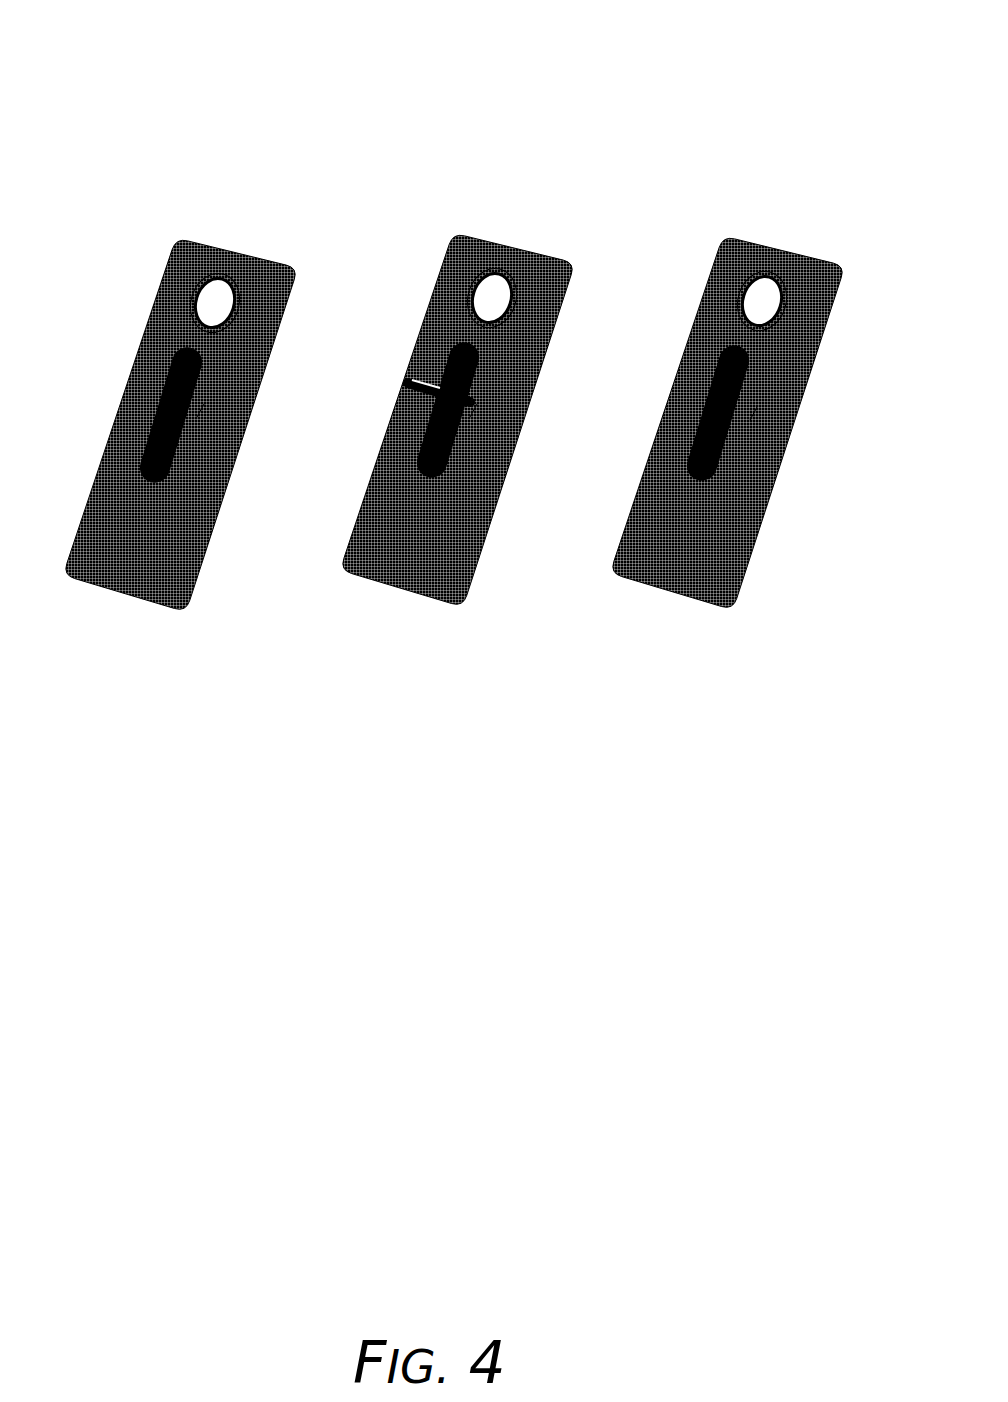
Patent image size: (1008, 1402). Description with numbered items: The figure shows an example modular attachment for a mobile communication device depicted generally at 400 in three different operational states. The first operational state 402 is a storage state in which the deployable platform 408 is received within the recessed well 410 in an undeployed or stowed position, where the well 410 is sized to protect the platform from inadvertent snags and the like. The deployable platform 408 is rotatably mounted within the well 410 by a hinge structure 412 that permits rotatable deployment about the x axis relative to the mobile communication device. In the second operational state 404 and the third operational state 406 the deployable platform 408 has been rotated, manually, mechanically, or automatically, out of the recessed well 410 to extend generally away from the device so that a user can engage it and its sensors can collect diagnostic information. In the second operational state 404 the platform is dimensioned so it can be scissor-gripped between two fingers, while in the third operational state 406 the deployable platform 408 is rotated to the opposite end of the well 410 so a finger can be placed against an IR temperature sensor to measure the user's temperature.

The modular attachment in three operational states 400 is at (548, 70).
The first operational state 402 is at (226, 238).
The second operational state 404 is at (504, 231).
The third operational state 406 is at (770, 231).
The deployable platform 408 is at (184, 350).
The recessed well 410 is at (157, 433).
The hinge structure 412 is at (197, 417).